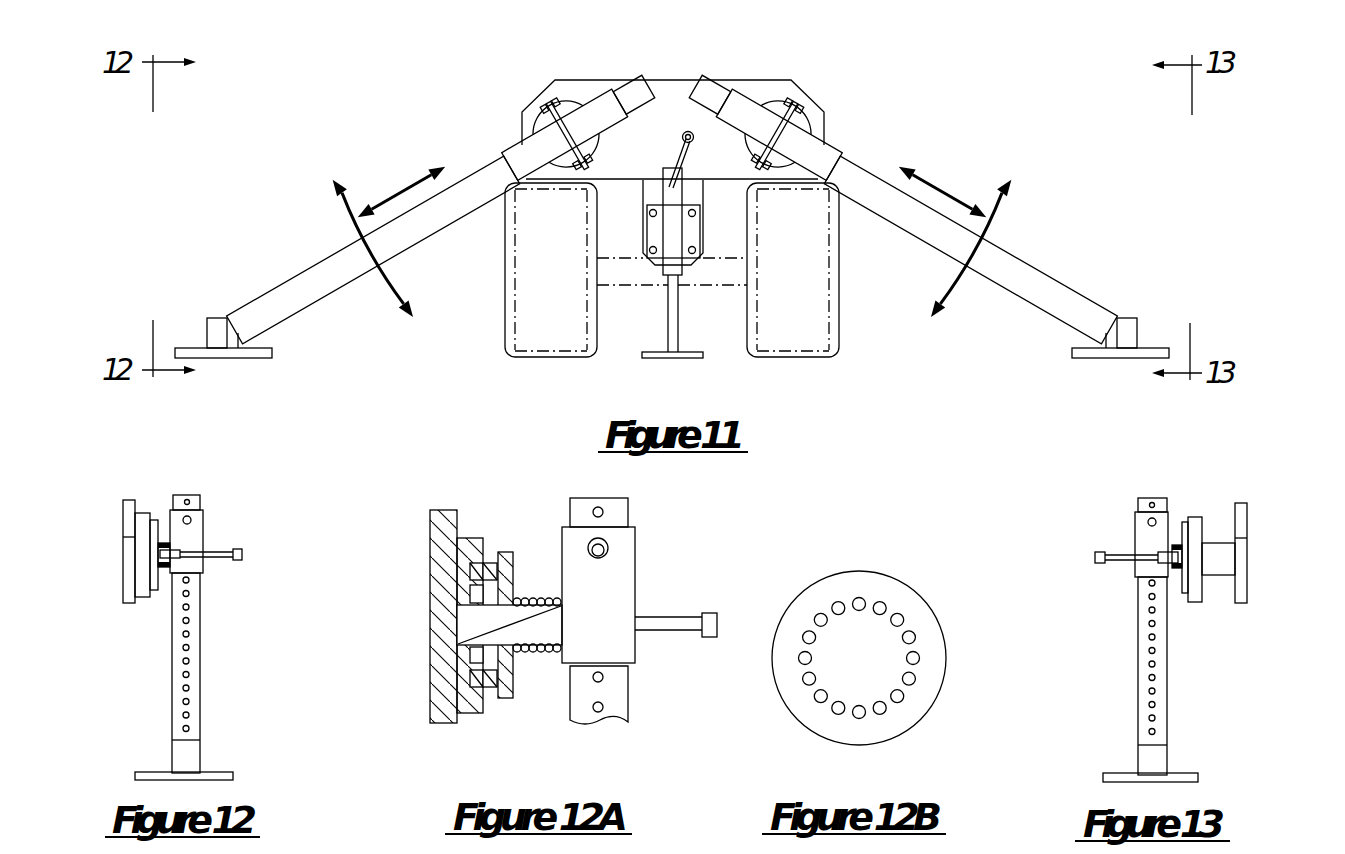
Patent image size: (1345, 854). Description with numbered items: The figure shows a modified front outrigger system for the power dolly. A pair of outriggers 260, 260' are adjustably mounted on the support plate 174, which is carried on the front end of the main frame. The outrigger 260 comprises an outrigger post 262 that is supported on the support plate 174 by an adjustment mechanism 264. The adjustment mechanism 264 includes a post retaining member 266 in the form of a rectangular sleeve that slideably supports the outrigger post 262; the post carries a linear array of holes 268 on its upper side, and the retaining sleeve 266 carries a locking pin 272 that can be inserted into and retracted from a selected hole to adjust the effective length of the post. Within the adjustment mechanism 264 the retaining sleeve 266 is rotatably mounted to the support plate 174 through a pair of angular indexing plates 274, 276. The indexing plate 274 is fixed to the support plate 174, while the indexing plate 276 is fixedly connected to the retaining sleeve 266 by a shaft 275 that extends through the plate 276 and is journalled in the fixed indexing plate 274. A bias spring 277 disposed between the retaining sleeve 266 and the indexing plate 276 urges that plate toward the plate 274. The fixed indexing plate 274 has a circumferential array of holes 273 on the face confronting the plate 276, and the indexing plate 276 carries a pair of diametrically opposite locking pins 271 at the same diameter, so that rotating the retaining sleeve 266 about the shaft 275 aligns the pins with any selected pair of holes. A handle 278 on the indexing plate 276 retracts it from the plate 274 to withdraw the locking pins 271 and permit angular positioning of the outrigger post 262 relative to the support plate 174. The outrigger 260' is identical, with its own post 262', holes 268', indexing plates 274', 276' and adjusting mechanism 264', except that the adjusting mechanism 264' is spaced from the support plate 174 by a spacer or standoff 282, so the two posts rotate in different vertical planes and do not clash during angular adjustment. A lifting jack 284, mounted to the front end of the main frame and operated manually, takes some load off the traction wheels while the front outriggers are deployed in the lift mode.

In FIG. 11, the support plate 174 is at (682, 80).
In FIG. 12, the support plate 174 is at (123, 522).
In FIG. 12A, the support plate 174 is at (430, 610).
In FIG. 13, the support plate 174 is at (1247, 518).
In FIG. 11, the outrigger 260 is at (415, 189).
In FIG. 12, the outrigger 260 is at (191, 600).
In FIG. 11, the outrigger 260' is at (912, 209).
In FIG. 13, the outrigger 260' is at (1152, 606).
In FIG. 11, the outrigger post 262 is at (373, 250).
In FIG. 12, the outrigger post 262 is at (210, 676).
In FIG. 12A, the outrigger post 262 is at (644, 708).
In FIG. 13, the outrigger post 262' is at (1182, 679).
In FIG. 11, the adjustment mechanism 264 is at (577, 101).
In FIG. 12, the adjustment mechanism 264 is at (118, 509).
In FIG. 12A, the adjustment mechanism 264 is at (397, 455).
In FIG. 13, the adjusting mechanism 264' is at (1210, 469).
In FIG. 11, the post retaining member 266 is at (502, 150).
In FIG. 12, the post retaining member 266 is at (205, 533).
In FIG. 12A, the post retaining member 266 is at (627, 642).
In FIG. 12, the holes 268 is at (135, 654).
In FIG. 12A, the holes 268 is at (648, 692).
In FIG. 13, the holes 268' is at (1102, 657).
In FIG. 12A, the locking pins 271 is at (487, 688).
In FIG. 12, the locking pin 272 is at (191, 517).
In FIG. 12A, the locking pin 272 is at (610, 548).
In FIG. 12B, the holes 273 is at (886, 712).
In FIG. 12, the indexing plate 274 is at (170, 499).
In FIG. 12A, the indexing plate 274 is at (473, 581).
In FIG. 12B, the indexing plate 274 is at (859, 616).
In FIG. 13, the indexing plate 274' is at (1230, 579).
In FIG. 12A, the shaft 275 is at (540, 653).
In FIG. 12, the indexing plate 276 is at (119, 585).
In FIG. 12A, the indexing plate 276 is at (524, 567).
In FIG. 13, the indexing plate 276' is at (1130, 574).
In FIG. 12A, the bias spring 277 is at (537, 598).
In FIG. 12, the handle 278 is at (243, 553).
In FIG. 12A, the handle 278 is at (667, 614).
In FIG. 13, the spacer or standoff 282 is at (1217, 543).
In FIG. 11, the lifting jack 284 is at (703, 230).